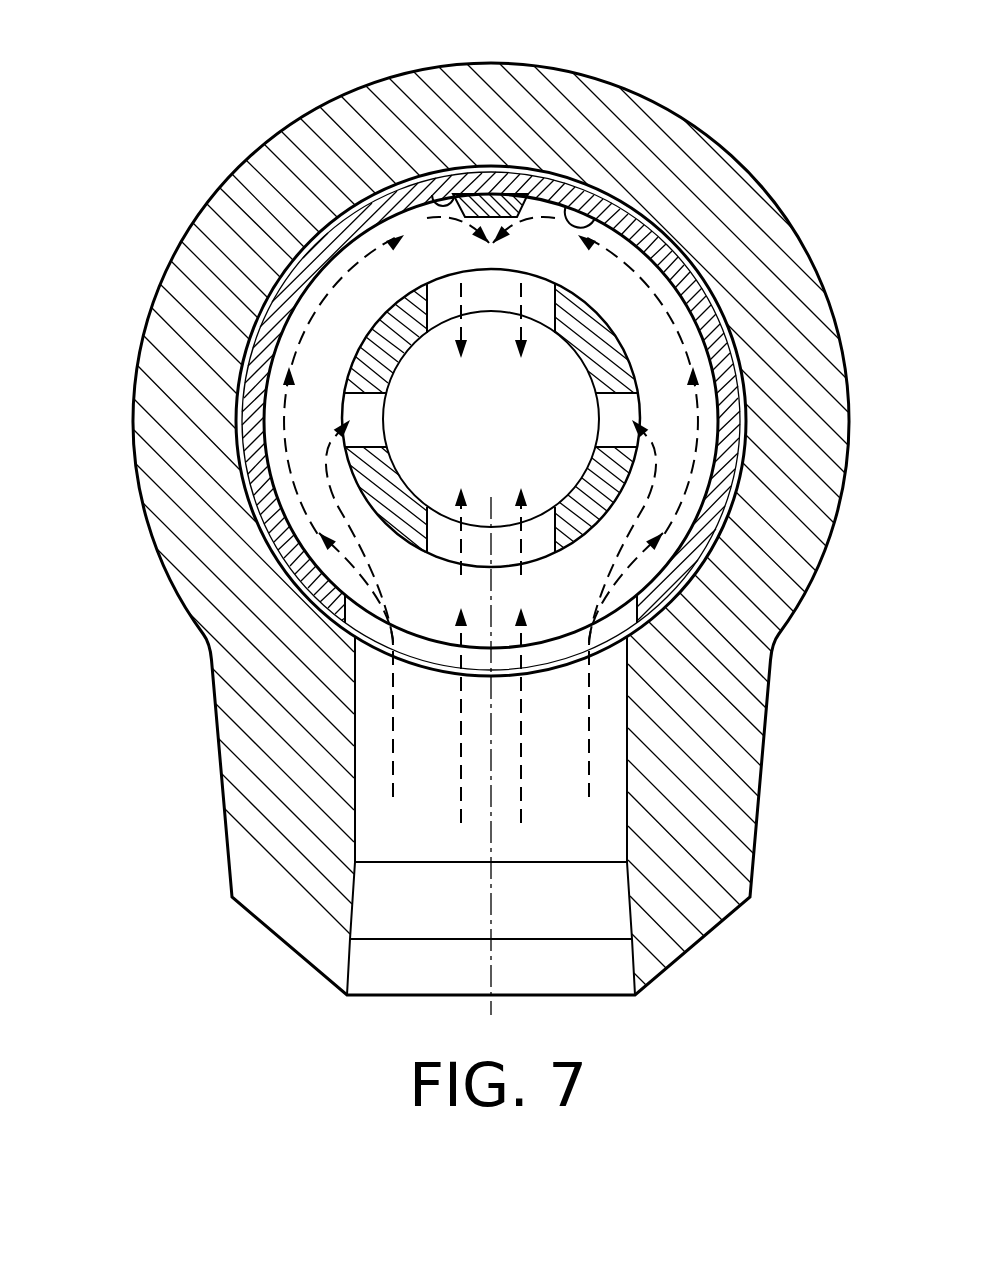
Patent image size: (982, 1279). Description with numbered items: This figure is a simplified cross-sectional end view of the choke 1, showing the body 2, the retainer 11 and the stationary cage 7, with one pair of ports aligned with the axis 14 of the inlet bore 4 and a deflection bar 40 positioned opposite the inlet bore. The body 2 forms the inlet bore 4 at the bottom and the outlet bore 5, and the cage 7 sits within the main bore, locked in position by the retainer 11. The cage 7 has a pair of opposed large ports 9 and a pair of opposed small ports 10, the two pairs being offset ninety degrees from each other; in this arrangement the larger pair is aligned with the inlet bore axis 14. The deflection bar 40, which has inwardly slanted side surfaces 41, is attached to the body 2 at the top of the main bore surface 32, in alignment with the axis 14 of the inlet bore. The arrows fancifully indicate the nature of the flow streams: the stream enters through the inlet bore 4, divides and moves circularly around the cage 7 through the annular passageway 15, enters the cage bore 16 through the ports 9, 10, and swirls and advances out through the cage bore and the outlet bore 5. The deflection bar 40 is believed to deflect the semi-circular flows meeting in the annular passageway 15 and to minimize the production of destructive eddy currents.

The choke 1 is at (463, 512).
The body 2 is at (737, 182).
The inlet bore 4 is at (444, 750).
The outlet bore 5 is at (484, 422).
The stationary cage 7 is at (583, 323).
The large ports 9 is at (437, 523).
The small ports 10 is at (612, 420).
The retainer 11 is at (278, 296).
The axis of the inlet bore 14 is at (493, 871).
The annular passageway 15 is at (655, 356).
The cage bore 16 is at (546, 459).
The main bore surface 32 is at (603, 208).
The deflection bar 40 is at (517, 192).
The inwardly slanted side surfaces 41 is at (429, 195).